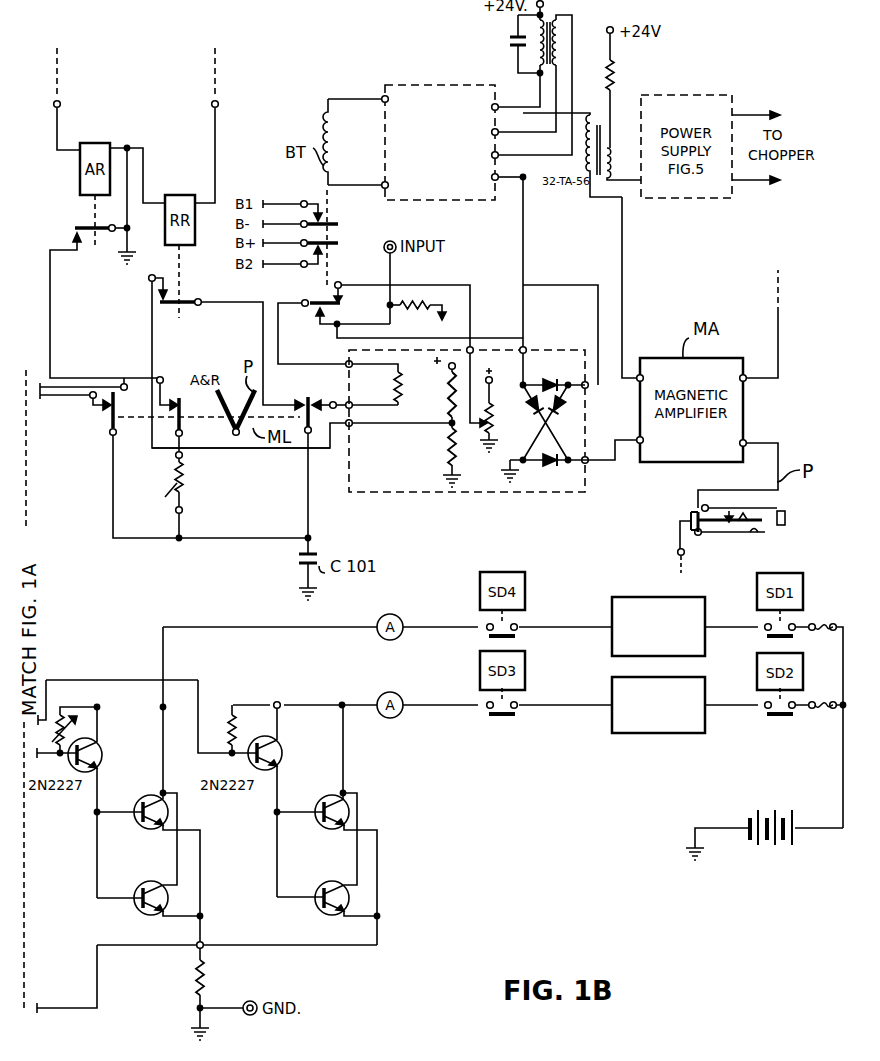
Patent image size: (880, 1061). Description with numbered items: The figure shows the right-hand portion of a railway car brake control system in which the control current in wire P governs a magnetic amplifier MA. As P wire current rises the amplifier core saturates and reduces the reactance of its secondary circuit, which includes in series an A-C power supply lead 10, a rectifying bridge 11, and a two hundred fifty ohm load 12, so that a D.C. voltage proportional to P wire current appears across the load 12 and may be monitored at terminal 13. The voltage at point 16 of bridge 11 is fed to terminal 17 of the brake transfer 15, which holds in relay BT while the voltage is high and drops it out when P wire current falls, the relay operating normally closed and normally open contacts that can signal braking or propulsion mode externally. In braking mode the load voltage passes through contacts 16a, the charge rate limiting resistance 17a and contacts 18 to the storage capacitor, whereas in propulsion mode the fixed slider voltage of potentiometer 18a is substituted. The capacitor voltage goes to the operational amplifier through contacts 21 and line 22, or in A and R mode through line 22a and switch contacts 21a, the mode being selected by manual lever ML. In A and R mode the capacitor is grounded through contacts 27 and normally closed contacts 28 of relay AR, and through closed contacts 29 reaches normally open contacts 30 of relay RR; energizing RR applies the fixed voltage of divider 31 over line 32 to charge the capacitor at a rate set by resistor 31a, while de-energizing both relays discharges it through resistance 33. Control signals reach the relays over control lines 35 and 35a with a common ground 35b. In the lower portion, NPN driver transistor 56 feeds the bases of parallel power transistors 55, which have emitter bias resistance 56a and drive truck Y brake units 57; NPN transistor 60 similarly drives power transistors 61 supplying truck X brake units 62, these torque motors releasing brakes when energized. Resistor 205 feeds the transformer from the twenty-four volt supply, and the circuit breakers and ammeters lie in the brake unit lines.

The A-C power supply lead 10 is at (622, 256).
The rectifying bridge 11 is at (553, 428).
The load 12 is at (420, 300).
The terminal 13 is at (390, 242).
The brake transfer 15 is at (447, 200).
The point of bridge 16 is at (538, 384).
The contacts 16a is at (315, 306).
The terminal 17 is at (496, 180).
The resistance 17a is at (405, 380).
The contacts 18 is at (318, 385).
The potentiometer 18a is at (490, 420).
The contacts 21 is at (209, 465).
The switch contacts 21a is at (110, 420).
The line 22 is at (63, 384).
The line 22a is at (88, 394).
The contacts 27 is at (176, 388).
The contacts 28 is at (103, 286).
The contacts 29 is at (294, 398).
The contacts 30 is at (226, 327).
The divider 31 is at (447, 443).
The resistor 31a is at (447, 392).
The line 32 is at (323, 449).
The resistance 33 is at (190, 470).
The control line 35 is at (57, 147).
The control line 35a is at (215, 132).
The ground connection 35b is at (128, 231).
The power transistors 55 is at (151, 985).
The NPN driver transistor 56 is at (104, 749).
The emitter bias resistance 56a is at (208, 990).
The truck Y brake units 57 is at (642, 597).
The NPN transistor 60 is at (288, 750).
The power transistors 61 is at (334, 985).
The truck X brake units 62 is at (632, 734).
The resistor 205 is at (600, 110).